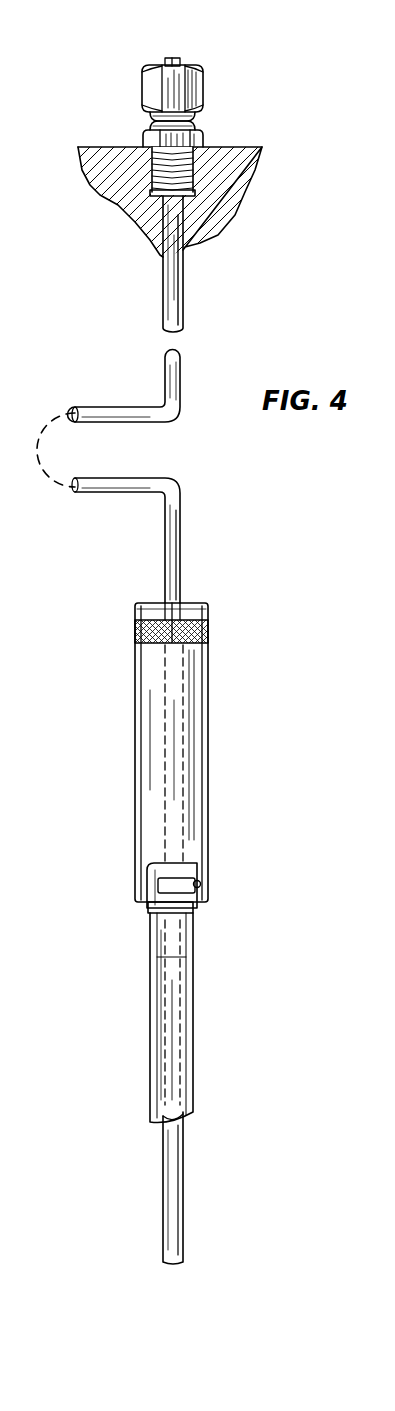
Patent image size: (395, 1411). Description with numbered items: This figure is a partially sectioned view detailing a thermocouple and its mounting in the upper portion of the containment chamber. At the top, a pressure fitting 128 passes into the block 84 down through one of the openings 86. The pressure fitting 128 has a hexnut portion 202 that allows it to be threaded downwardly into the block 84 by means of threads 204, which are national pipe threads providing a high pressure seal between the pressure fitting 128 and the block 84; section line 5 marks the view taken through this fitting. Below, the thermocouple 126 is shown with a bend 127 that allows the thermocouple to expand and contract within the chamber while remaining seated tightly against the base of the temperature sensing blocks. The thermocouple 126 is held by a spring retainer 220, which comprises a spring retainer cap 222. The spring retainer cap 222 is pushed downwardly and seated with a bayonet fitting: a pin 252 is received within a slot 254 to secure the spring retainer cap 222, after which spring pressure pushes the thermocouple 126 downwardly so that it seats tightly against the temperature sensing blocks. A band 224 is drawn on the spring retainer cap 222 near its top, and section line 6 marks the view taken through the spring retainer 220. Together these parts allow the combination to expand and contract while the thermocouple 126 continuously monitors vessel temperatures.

The section line 5- 5 is at (176, 88).
The section line 6- 6 is at (180, 570).
The block 84 is at (263, 150).
The openings 86 is at (195, 224).
The thermocouple 126 is at (181, 62).
The bend 127 is at (52, 455).
The pressure fitting 128 is at (215, 88).
The hexnut portion 202 is at (205, 135).
The threads 204 is at (158, 172).
The spring retainer 220 is at (234, 725).
The spring retainer cap 222 is at (197, 680).
The packing / seal band 224 is at (210, 626).
The pin 252 is at (203, 883).
The slot 254 is at (192, 870).